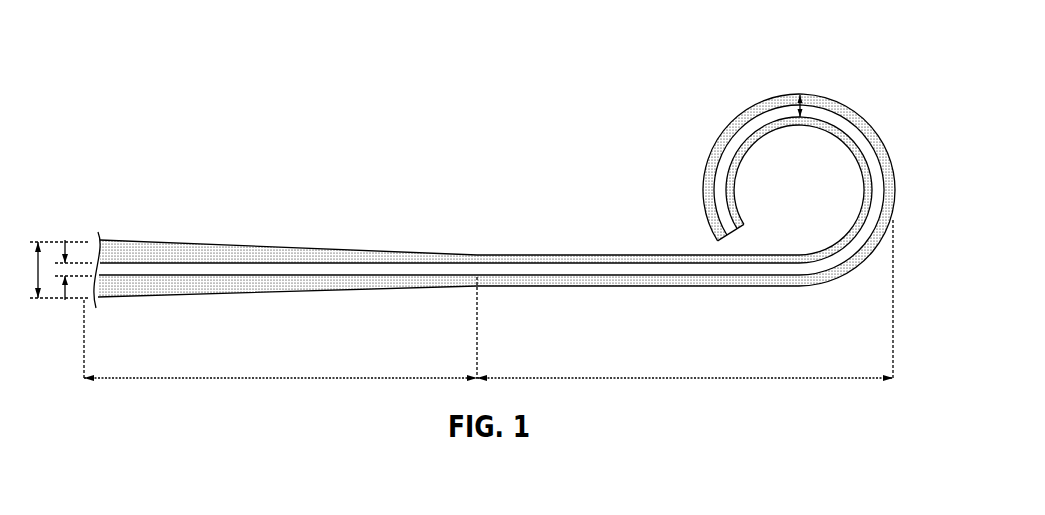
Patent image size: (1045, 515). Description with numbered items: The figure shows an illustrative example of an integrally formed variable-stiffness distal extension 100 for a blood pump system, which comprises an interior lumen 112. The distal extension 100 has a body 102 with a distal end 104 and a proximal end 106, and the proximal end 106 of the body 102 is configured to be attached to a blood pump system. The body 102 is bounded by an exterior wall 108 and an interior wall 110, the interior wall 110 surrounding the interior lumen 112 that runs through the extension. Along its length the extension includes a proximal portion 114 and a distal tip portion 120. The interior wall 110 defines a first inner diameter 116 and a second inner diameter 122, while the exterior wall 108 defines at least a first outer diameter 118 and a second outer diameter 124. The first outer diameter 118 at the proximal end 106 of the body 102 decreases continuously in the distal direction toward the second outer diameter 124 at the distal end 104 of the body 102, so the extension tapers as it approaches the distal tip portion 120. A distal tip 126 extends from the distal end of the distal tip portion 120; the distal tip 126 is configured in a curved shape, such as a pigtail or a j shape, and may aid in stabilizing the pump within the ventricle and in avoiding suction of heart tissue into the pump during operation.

The integrally formed variable-stiffness distal extension 100 is at (134, 47).
The body 102 is at (477, 255).
The distal end 104 is at (838, 280).
The proximal end 106 is at (252, 293).
The exterior wall 108 is at (430, 287).
The interior wall 110 is at (565, 277).
The interior lumen 112 is at (642, 268).
The proximal portion 114 is at (245, 378).
The first inner diameter 116 is at (64, 298).
The first outer diameter 118 is at (41, 272).
The distal tip portion 120 is at (695, 378).
The second inner diameter 122 is at (736, 138).
The second outer diameter 124 is at (804, 106).
The distal tip 126 is at (897, 183).